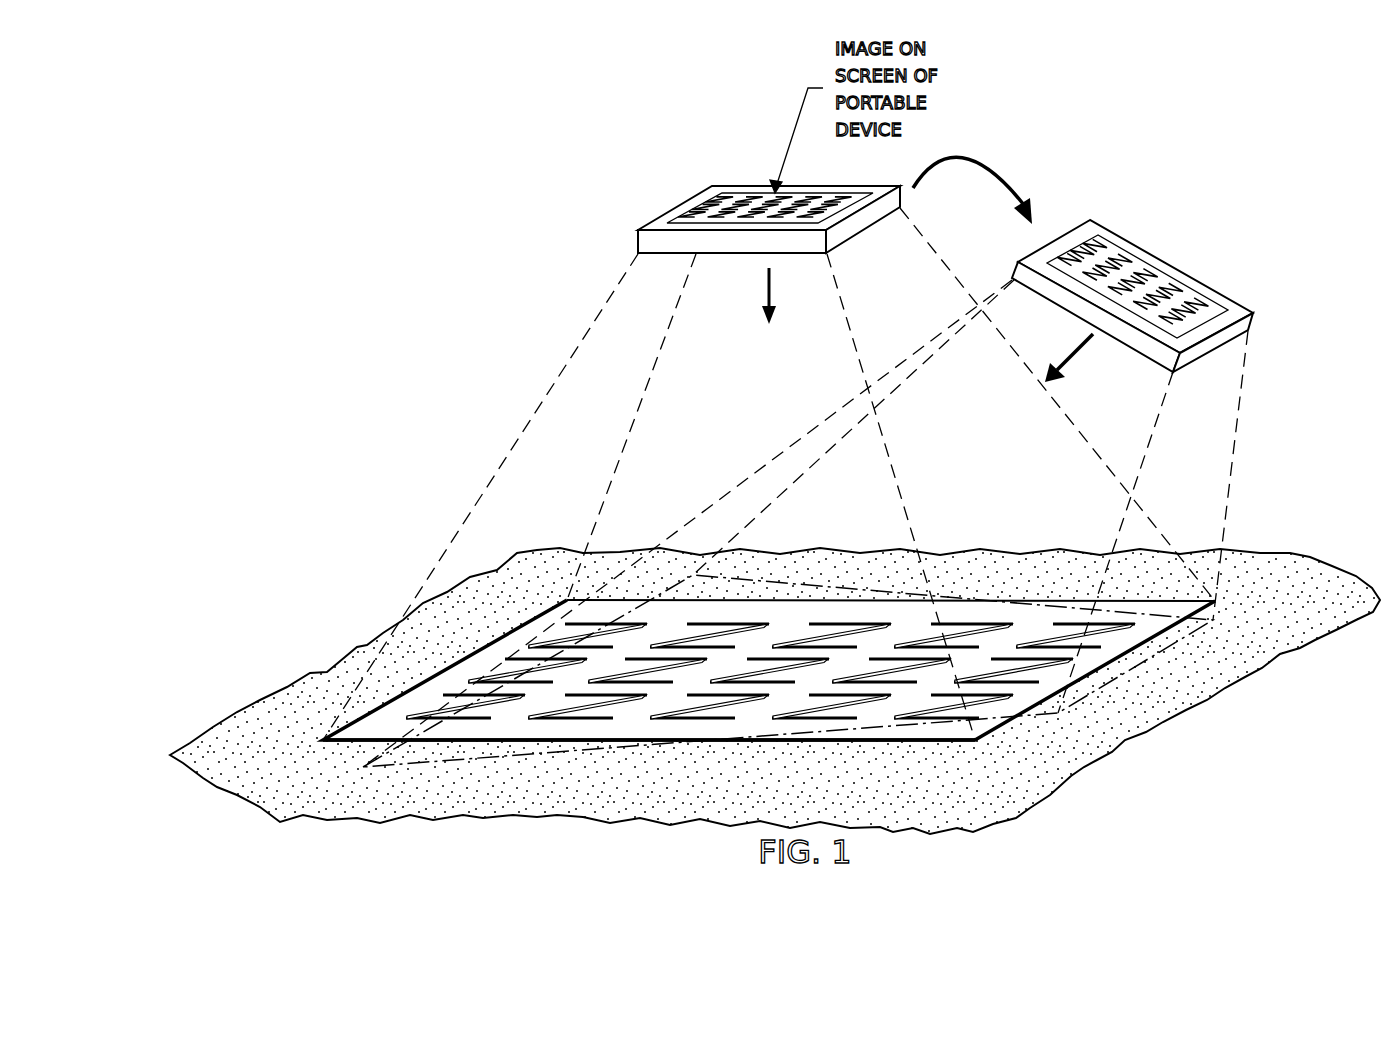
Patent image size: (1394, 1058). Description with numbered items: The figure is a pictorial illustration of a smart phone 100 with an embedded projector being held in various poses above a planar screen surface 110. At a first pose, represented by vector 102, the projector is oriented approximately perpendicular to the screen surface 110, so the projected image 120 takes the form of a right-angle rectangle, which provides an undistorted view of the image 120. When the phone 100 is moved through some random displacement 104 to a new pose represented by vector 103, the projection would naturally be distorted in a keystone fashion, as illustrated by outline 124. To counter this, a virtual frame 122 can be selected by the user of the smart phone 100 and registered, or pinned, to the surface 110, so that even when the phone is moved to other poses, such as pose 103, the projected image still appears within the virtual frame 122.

The smart phone 100 is at (682, 206).
The vector representing first pose 102 is at (766, 294).
The vector representing new pose 103 is at (1078, 352).
The random displacement 104 is at (972, 158).
The planar screen surface 110 is at (1280, 555).
The projected image 120 is at (397, 712).
The virtual frame 122 is at (907, 742).
The outline of keystone-distorted projection 124 is at (451, 764).